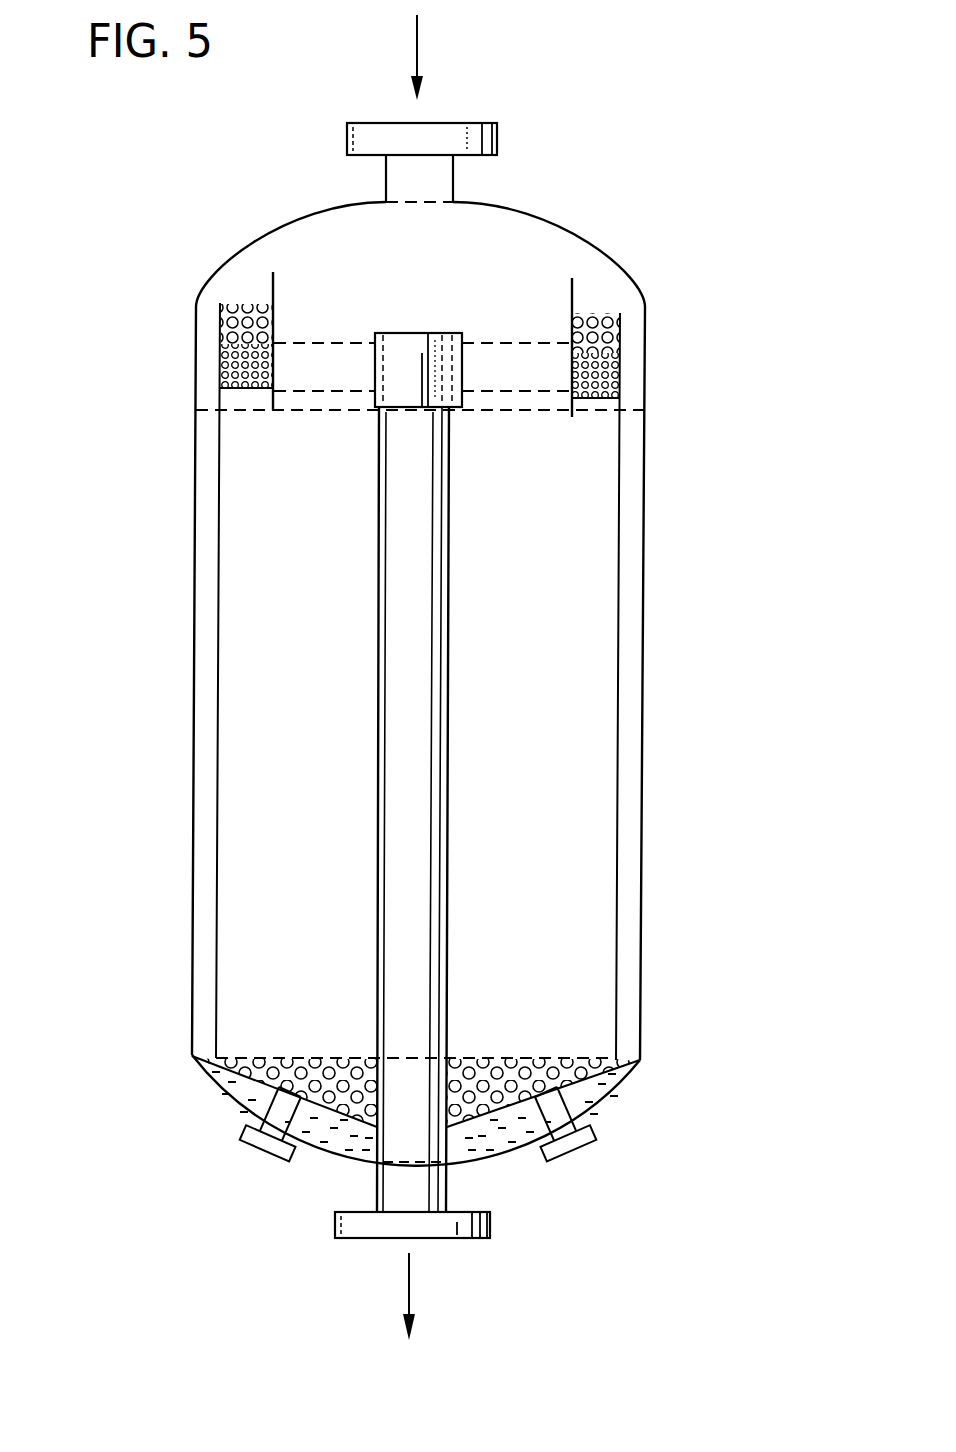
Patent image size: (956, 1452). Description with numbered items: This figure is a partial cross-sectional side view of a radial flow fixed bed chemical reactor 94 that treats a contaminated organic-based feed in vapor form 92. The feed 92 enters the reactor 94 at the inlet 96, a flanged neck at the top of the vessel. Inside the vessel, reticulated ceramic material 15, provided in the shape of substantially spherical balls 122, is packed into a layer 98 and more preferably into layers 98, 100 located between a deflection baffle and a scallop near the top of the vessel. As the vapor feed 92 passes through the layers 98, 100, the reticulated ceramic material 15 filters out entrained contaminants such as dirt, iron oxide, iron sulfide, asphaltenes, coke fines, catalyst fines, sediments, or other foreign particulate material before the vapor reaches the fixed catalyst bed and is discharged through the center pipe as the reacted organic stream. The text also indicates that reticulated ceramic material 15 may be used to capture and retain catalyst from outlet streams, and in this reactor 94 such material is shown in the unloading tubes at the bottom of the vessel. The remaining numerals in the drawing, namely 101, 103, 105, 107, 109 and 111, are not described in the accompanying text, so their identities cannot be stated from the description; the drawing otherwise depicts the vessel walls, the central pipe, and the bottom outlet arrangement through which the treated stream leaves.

The reticulated ceramic material 15 is at (222, 316).
The contaminated organic-based feed in vapor form 92 is at (418, 45).
The radial flow fixed bed chemical reactor 94 is at (195, 535).
The inlet 96 is at (347, 137).
The layer of reticulated ceramic material 98 is at (248, 305).
The layer of reticulated ceramic material 100 is at (222, 377).
The baffle 101 is at (572, 295).
The inner liner wall 103 is at (618, 575).
The drain nozzles 105 is at (238, 1100).
The annular reaction chamber 107 is at (262, 750).
The central outlet tube 109 is at (450, 785).
The outlet stream 111 is at (412, 1280).
The substantially spherical balls 122 is at (600, 315).